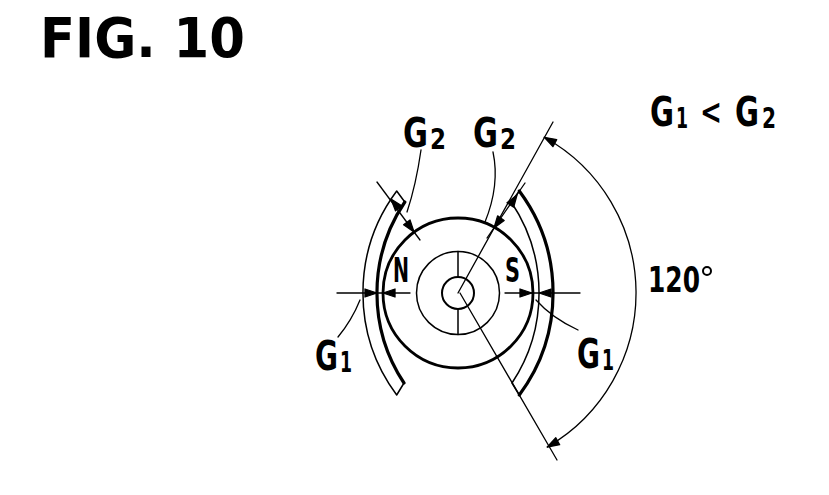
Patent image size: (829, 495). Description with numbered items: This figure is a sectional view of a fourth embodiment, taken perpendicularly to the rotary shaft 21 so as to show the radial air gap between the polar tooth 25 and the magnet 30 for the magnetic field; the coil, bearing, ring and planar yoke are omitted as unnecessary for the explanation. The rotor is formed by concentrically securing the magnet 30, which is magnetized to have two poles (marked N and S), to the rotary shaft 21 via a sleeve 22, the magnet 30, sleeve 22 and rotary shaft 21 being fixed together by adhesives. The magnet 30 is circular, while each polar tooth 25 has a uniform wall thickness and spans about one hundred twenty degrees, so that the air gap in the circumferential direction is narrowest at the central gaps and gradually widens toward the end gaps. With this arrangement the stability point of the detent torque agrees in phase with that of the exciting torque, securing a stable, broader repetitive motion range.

The rotary shaft 21 is at (451, 305).
The sleeve 22 is at (457, 323).
The polar tooth 25 is at (375, 241).
The magnet 30 is at (421, 349).